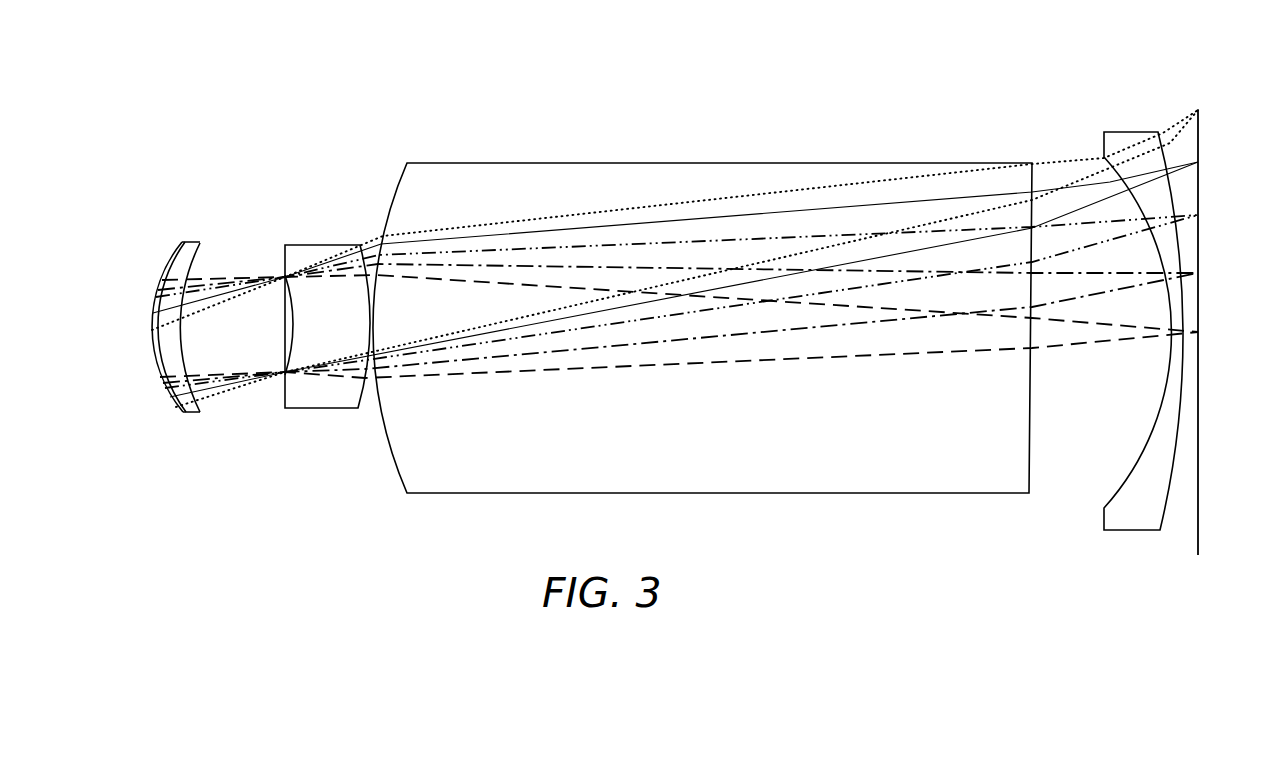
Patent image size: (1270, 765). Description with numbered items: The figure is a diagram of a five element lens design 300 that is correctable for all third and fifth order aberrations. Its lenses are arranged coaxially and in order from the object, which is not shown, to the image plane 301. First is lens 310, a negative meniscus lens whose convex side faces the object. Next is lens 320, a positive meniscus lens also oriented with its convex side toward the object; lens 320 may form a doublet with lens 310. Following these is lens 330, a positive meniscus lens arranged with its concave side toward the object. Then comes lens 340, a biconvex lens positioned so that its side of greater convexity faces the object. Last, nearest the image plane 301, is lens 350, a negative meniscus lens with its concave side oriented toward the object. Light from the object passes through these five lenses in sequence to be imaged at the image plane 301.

The five element lens design 300 is at (422, 28).
The lens 310 is at (182, 242).
The lens 320 is at (200, 252).
The lens 330 is at (324, 245).
The lens 340 is at (667, 163).
The lens 350 is at (1133, 132).
The image plane 301 is at (1198, 132).